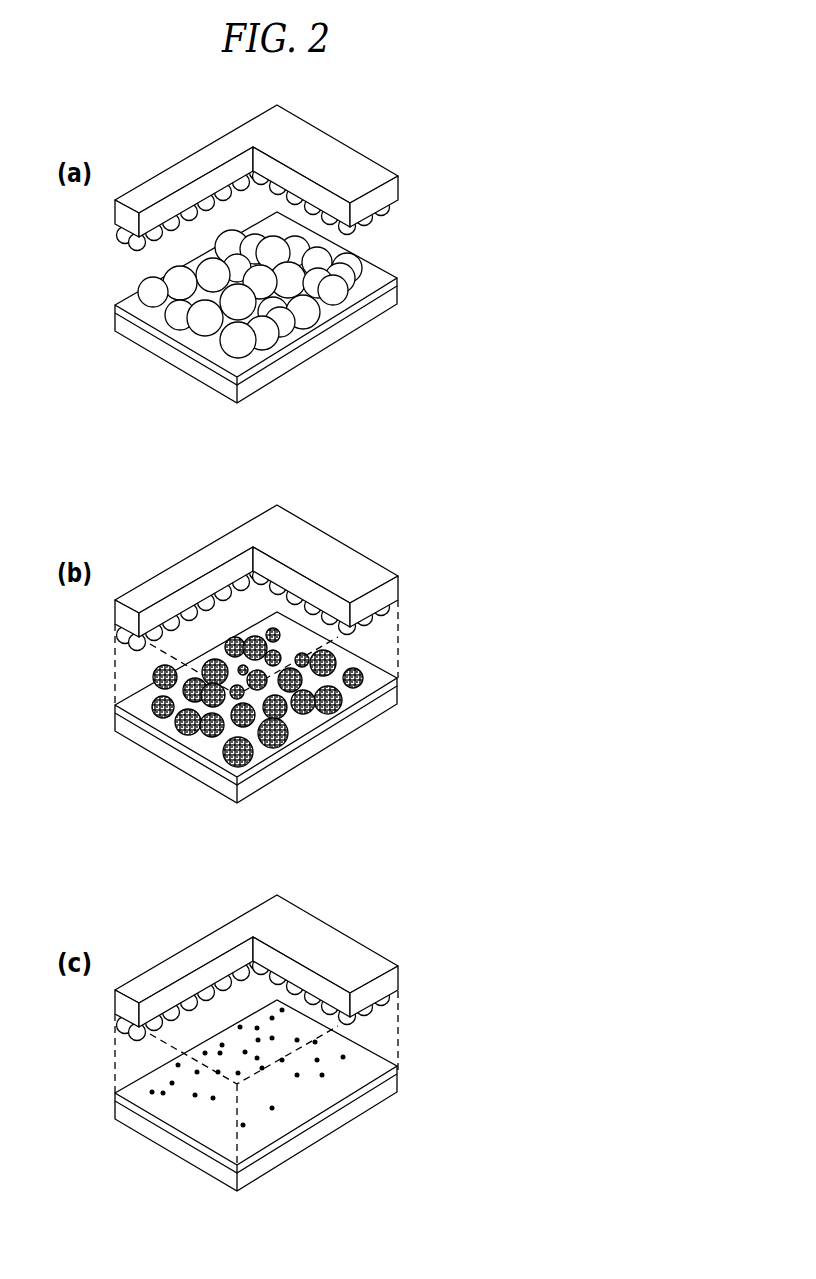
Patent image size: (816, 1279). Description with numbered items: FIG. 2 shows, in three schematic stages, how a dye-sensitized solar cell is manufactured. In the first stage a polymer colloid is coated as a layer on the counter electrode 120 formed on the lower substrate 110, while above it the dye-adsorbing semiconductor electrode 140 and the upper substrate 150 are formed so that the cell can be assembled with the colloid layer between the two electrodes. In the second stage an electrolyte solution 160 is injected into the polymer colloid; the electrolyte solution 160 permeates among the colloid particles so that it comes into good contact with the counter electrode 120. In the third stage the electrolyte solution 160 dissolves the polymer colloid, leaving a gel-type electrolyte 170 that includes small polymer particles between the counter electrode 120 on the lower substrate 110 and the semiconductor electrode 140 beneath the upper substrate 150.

The lower substrate 110 is at (382, 310).
The counter electrode 120 is at (381, 284).
The semiconductor electrode 140 is at (345, 232).
The upper substrate 150 is at (358, 168).
The electrolyte solution 160 is at (398, 640).
The gel-type electrolyte 170 is at (343, 1057).